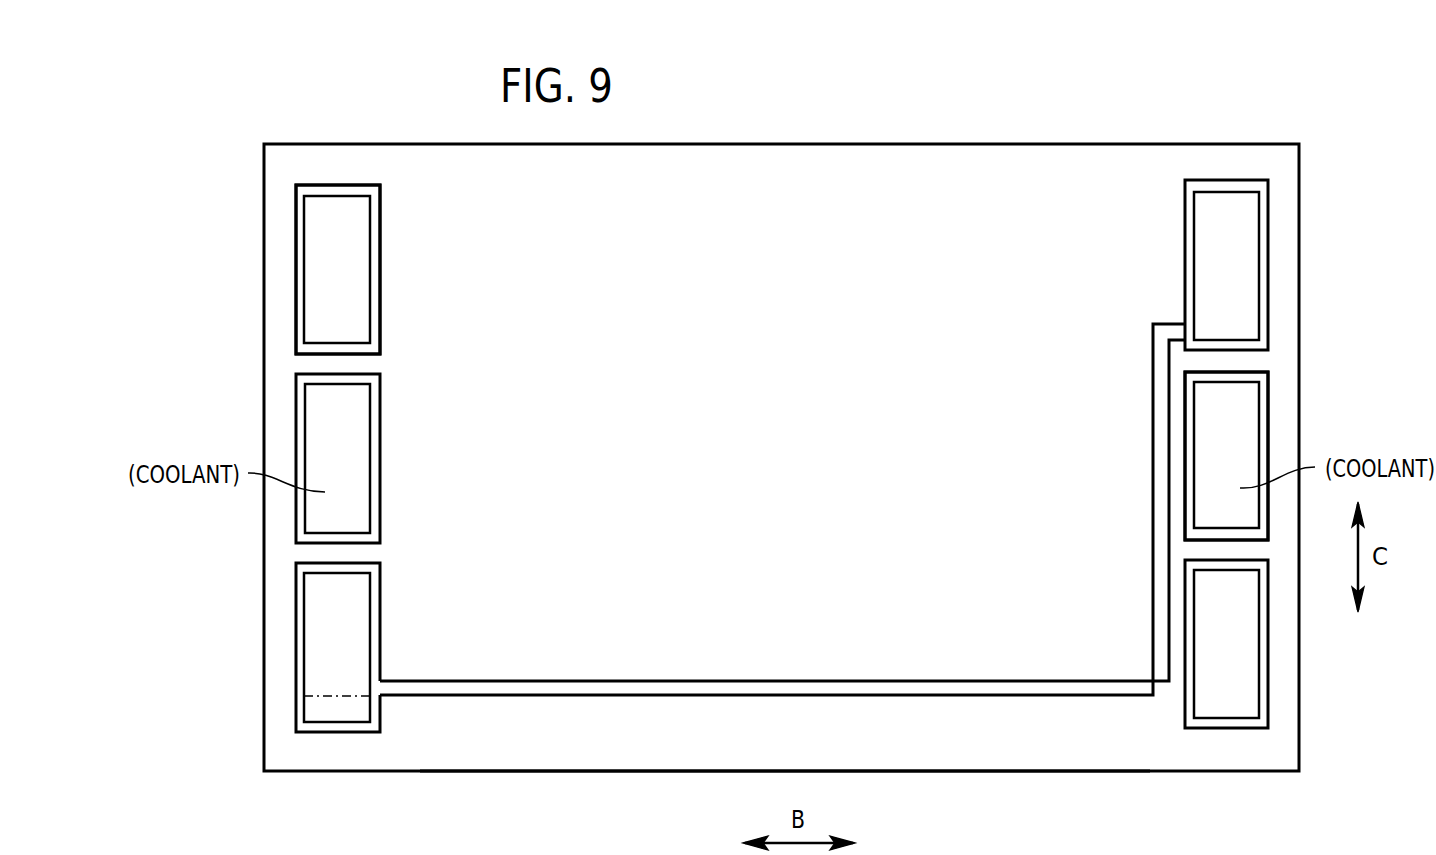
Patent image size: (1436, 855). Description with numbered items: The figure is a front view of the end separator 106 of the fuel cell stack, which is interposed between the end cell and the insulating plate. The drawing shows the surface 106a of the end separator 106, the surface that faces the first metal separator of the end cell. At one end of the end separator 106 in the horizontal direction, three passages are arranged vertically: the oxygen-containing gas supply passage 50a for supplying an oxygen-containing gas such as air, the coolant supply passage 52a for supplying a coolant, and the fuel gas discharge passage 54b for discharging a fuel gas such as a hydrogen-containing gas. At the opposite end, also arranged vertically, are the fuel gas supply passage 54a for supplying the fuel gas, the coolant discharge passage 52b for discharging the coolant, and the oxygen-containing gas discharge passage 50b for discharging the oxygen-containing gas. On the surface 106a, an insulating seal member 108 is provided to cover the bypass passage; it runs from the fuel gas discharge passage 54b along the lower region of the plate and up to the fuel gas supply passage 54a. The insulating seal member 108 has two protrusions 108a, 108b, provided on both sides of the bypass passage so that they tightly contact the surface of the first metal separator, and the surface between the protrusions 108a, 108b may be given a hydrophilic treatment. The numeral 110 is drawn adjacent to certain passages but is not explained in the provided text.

The end separator 106 is at (1014, 124).
The surface 106a is at (947, 750).
The insulating seal member 108 is at (782, 509).
The protrusion 108a is at (660, 628).
The protrusion 108b is at (682, 678).
The seal member 110 is at (380, 272).
The oxygen-containing gas supply passage 50a is at (338, 269).
The oxygen-containing gas discharge passage 50b is at (1226, 644).
The coolant supply passage 52a is at (338, 458).
The coolant discharge passage 52b is at (1226, 456).
The fuel gas supply passage 54a is at (1226, 265).
The fuel gas discharge passage 54b is at (338, 647).